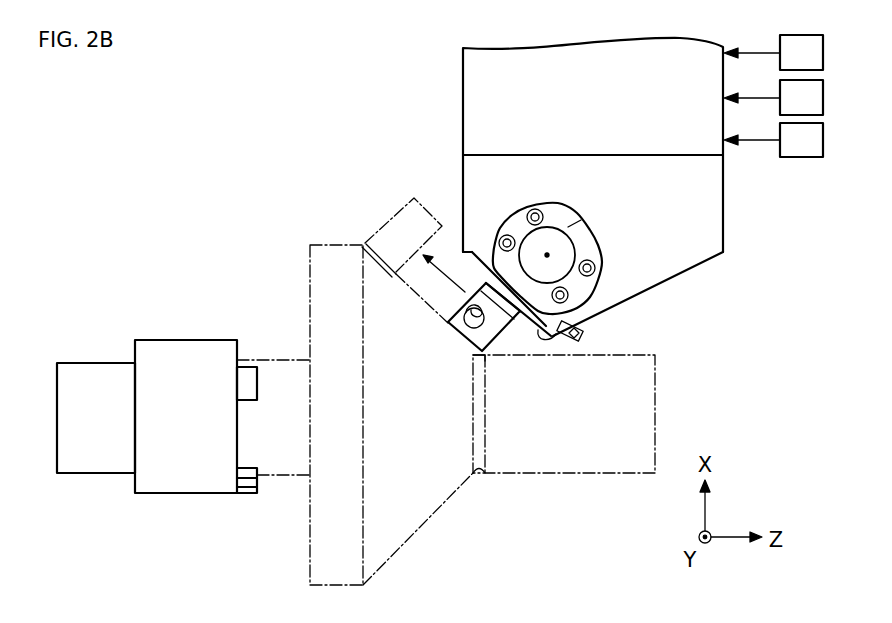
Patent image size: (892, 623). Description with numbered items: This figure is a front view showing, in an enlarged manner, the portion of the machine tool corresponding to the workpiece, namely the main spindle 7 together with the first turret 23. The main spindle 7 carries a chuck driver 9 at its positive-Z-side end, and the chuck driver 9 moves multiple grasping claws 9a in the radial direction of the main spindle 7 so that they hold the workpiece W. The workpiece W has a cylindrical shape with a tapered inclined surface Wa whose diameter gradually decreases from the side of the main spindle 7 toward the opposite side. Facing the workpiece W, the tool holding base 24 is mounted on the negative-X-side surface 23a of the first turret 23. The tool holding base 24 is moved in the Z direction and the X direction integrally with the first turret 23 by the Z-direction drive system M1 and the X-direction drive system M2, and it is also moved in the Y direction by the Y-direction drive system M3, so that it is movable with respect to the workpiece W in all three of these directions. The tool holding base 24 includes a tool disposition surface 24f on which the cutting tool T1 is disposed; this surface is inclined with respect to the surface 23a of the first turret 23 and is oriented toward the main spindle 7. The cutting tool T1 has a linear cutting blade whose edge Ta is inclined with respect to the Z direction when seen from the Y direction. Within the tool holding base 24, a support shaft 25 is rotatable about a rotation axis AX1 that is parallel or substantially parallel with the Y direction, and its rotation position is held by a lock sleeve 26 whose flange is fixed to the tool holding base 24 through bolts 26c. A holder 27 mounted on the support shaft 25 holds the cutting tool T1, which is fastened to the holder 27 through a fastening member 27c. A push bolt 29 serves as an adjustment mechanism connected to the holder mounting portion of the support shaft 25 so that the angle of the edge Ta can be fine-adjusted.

The main spindle 7 is at (100, 372).
The chuck driver 9 is at (178, 352).
The grasping claws 9a is at (245, 372).
The first turret 23 is at (472, 80).
The negative-X-side surface of the first turret 23a is at (472, 155).
The tool holding base 24 is at (710, 217).
The tool disposition surface 24f is at (526, 326).
The support shaft 25 is at (560, 273).
The lock sleeve 26 is at (600, 247).
The bolts 26c is at (535, 212).
The holder 27 is at (487, 282).
The fastening member 27c is at (497, 320).
The push bolt 29 is at (585, 338).
The cutting tool T1 is at (528, 318).
The edge of the linear cutting blade Ta is at (450, 327).
The workpiece W is at (594, 475).
The inclined surface Wa is at (440, 507).
The rotation axis AX1 is at (548, 254).
The Z-direction drive system M1 is at (773, 52).
The X-direction drive system M2 is at (773, 97).
The Y-direction drive system M3 is at (773, 140).